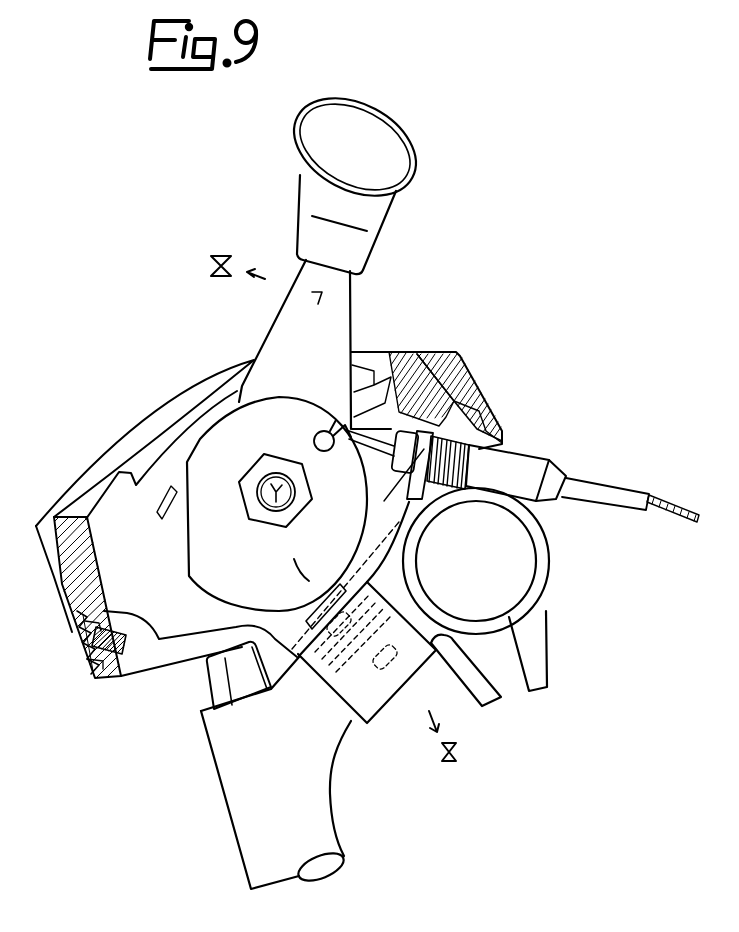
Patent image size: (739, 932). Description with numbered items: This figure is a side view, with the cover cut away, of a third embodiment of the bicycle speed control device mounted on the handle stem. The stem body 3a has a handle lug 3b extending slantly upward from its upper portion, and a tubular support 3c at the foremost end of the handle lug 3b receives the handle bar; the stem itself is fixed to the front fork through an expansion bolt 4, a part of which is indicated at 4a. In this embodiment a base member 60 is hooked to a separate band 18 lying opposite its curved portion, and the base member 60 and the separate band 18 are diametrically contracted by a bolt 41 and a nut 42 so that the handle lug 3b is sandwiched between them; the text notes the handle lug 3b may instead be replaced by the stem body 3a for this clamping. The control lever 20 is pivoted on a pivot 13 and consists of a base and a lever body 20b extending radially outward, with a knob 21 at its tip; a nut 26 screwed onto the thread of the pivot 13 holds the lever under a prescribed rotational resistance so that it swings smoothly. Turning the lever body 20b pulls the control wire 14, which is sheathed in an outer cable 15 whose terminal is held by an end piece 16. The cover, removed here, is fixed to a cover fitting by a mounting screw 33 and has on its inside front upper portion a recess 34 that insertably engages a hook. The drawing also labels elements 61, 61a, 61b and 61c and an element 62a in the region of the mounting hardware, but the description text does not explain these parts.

The knob 21 is at (388, 228).
The control lever 20 is at (364, 326).
The lever body 20b is at (343, 293).
The recess 34 is at (403, 397).
The stopper piece 62a is at (425, 373).
The bracket 61 is at (146, 533).
The adjusting bolt 61a is at (530, 480).
The spring 61b is at (472, 427).
The nut 61c is at (110, 670).
The end piece 16 is at (560, 480).
The outer cable 15 is at (604, 490).
The control wire 14 is at (677, 508).
The nut 26 is at (252, 480).
The pivot 13 is at (260, 467).
The pin 4a is at (318, 430).
The expansion bolt 4 is at (220, 680).
The support 3c is at (550, 573).
The base member 60 is at (370, 598).
The bolt 41 is at (415, 673).
The nut 42 is at (385, 680).
The separate band 18 is at (374, 730).
The stem body 3a is at (240, 810).
The handle lug 3b is at (323, 750).
The mounting screw 33 is at (95, 660).